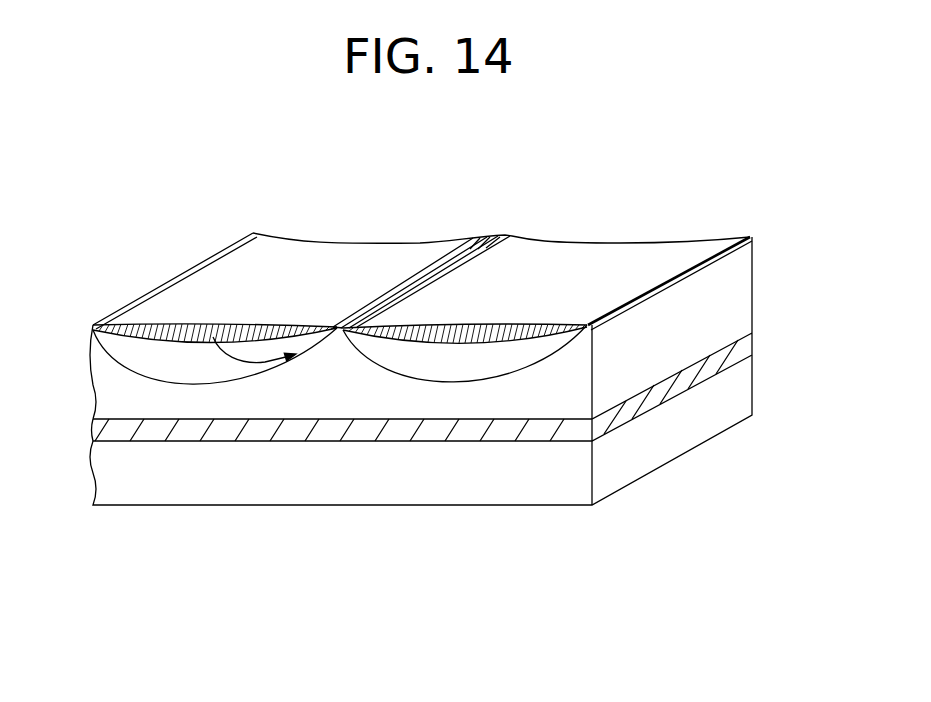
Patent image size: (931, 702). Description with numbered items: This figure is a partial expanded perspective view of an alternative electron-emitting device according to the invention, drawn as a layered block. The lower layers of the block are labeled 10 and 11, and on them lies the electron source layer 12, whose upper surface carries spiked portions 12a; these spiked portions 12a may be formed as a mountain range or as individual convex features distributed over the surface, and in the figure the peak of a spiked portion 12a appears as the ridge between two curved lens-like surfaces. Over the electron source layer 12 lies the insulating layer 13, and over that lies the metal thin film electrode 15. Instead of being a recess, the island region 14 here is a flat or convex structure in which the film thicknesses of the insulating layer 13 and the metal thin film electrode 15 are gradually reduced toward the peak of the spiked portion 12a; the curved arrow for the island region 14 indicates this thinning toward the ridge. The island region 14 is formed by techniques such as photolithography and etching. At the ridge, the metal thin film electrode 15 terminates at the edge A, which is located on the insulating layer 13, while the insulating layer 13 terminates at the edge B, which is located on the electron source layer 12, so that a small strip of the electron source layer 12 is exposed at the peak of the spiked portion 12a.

The substrate 10 is at (745, 397).
The intermediate layer 11 is at (745, 345).
The electron source layer 12 is at (743, 280).
The spiked portion 12a is at (345, 357).
The insulating layer 13 is at (455, 362).
The island region 14 is at (213, 337).
The metal thin film electrode 15 is at (657, 265).
The edge A is at (520, 230).
The edge B is at (510, 226).